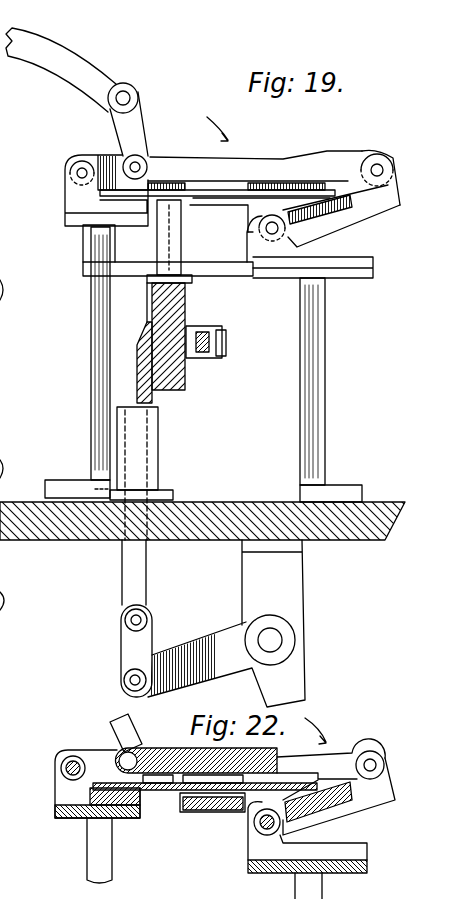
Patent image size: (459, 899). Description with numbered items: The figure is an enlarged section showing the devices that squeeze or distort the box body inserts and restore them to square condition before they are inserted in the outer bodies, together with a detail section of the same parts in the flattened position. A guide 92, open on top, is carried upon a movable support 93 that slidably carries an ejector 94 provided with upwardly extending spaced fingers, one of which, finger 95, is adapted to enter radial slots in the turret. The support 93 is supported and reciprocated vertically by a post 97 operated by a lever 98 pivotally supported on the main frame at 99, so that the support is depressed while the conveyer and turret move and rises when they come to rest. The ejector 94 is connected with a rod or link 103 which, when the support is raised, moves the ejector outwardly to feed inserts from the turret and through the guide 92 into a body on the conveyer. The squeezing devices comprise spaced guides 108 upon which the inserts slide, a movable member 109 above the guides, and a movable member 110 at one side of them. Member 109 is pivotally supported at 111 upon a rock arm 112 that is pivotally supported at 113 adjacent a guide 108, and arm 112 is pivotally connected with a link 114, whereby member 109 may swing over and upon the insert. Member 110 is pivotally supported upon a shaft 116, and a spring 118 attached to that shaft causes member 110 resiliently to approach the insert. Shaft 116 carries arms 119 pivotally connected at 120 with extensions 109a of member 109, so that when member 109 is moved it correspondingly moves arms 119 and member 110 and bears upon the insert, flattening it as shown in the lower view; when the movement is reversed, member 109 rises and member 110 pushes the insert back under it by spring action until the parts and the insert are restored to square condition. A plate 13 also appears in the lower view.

In FIG. 22, the plate 13 is at (180, 792).
In FIG. 19, the guide 92 is at (219, 271).
In FIG. 19, the movable support 93 is at (140, 300).
In FIG. 19, the ejector 94 is at (180, 388).
In FIG. 19, the finger 95 is at (174, 252).
In FIG. 19, the post 97 is at (126, 577).
In FIG. 19, the lever 98 is at (207, 652).
In FIG. 19, the pivot 99 is at (272, 640).
In FIG. 19, the rod or link 103 is at (204, 360).
In FIG. 19, the guides 108 is at (108, 205).
In FIG. 22, the guides 108 is at (122, 806).
In FIG. 19, the movable member 109 is at (231, 174).
In FIG. 22, the movable member 109 is at (176, 740).
In FIG. 19, the extensions 109a is at (343, 168).
In FIG. 22, the extensions 109a is at (312, 763).
In FIG. 19, the movable member 110 is at (348, 214).
In FIG. 22, the movable member 110 is at (330, 797).
In FIG. 19, the pivot 111 is at (133, 162).
In FIG. 19, the rock arm 112 is at (136, 118).
In FIG. 22, the rock arm 112 is at (92, 752).
In FIG. 19, the pivot 113 is at (76, 173).
In FIG. 19, the link 114 is at (58, 53).
In FIG. 19, the shaft 116 is at (300, 222).
In FIG. 22, the shaft 116 is at (250, 828).
In FIG. 22, the spring 118 is at (260, 835).
In FIG. 19, the arms 119 is at (341, 216).
In FIG. 22, the arms 119 is at (372, 803).
In FIG. 19, the pivot connection 120 is at (4, 560).
In FIG. 22, the pivot connection 120 is at (384, 750).